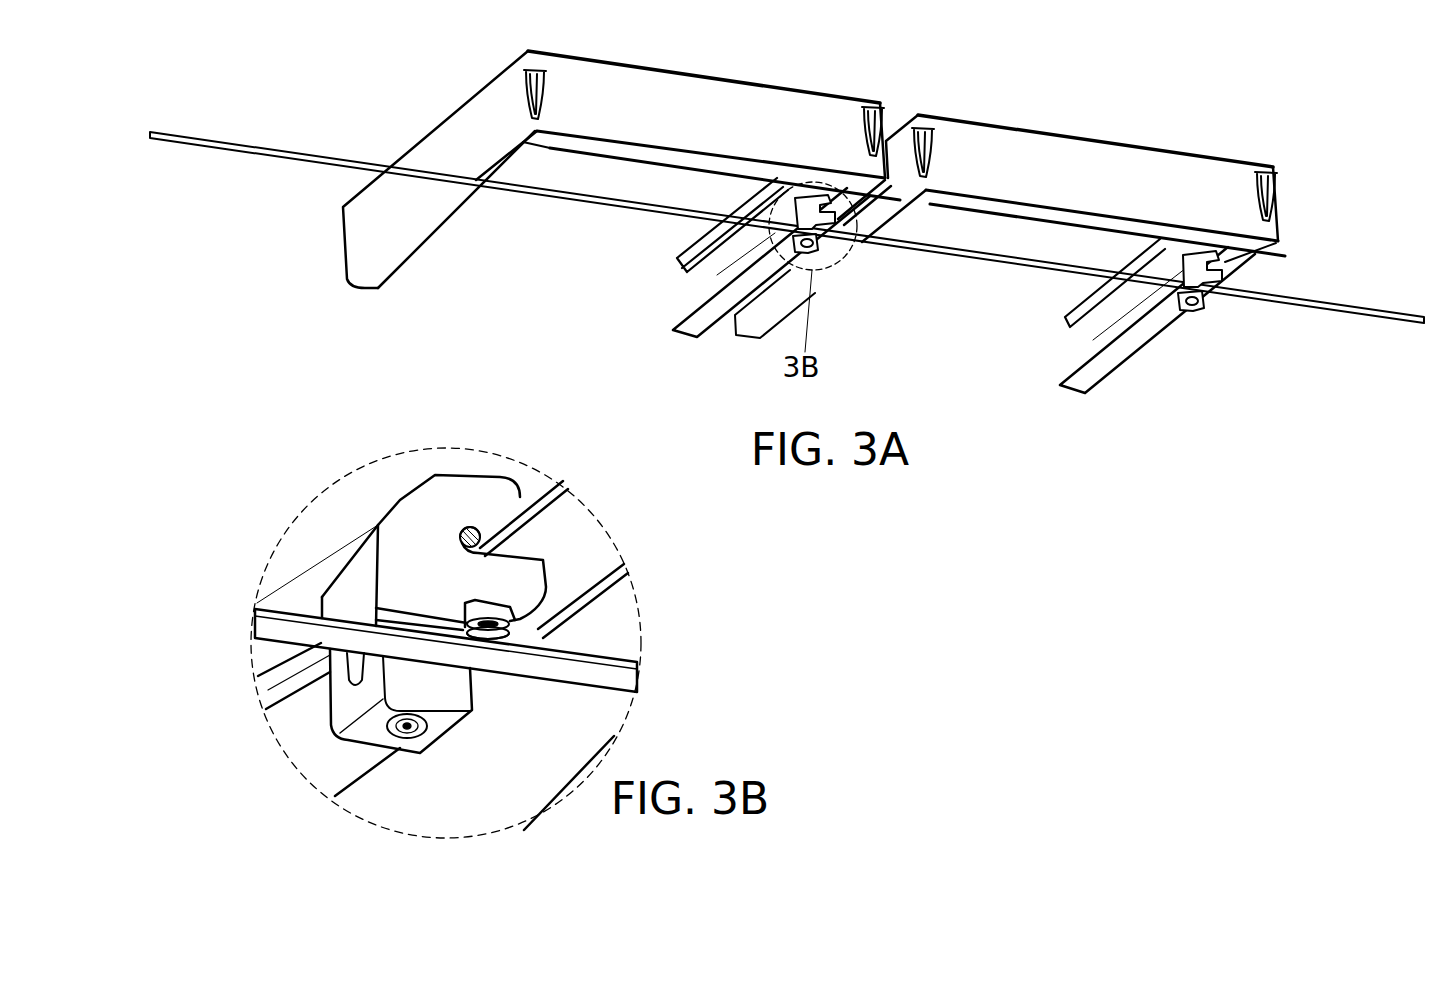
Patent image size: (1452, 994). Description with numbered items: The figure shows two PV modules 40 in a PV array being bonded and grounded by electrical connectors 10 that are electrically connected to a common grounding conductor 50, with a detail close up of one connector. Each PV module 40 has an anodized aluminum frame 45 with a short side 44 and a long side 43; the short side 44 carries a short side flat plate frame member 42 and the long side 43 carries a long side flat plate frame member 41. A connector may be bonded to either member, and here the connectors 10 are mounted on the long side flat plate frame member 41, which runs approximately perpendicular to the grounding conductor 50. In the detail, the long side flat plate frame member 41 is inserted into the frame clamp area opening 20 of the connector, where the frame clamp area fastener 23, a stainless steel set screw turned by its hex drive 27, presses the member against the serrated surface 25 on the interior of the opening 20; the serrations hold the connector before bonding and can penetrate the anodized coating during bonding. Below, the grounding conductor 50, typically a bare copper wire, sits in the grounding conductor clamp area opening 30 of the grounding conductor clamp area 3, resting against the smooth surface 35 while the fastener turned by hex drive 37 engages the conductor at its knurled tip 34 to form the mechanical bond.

In FIG. 3B, the grounding conductor clamp area 3 is at (352, 722).
In FIG. 3A, the electrical connector 10 is at (822, 252).
In FIG. 3B, the electrical connector 10 is at (378, 511).
In FIG. 3B, the frame clamp area opening 20 is at (455, 523).
In FIG. 3B, the frame clamp area fastener 23 is at (517, 630).
In FIG. 3B, the serrated surface 25 is at (480, 522).
In FIG. 3B, the hex drive 27 is at (487, 650).
In FIG. 3B, the grounding conductor clamp area opening 30 is at (344, 673).
In FIG. 3B, the knurled tip 34 is at (412, 672).
In FIG. 3B, the smooth surface 35 is at (344, 612).
In FIG. 3B, the hex drive 37 is at (405, 742).
In FIG. 3A, the PV module 40 is at (746, 82).
In FIG. 3A, the long side flat plate frame member 41 is at (377, 268).
In FIG. 3B, the long side flat plate frame member 41 is at (560, 541).
In FIG. 3A, the short side flat plate frame member 42 is at (636, 160).
In FIG. 3A, the long side 43 is at (711, 278).
In FIG. 3B, the long side 43 is at (548, 510).
In FIG. 3A, the short side 44 is at (803, 115).
In FIG. 3A, the anodized aluminum frame 45 is at (601, 96).
In FIG. 3A, the grounding conductor 50 is at (306, 148).
In FIG. 3B, the grounding conductor 50 is at (607, 651).